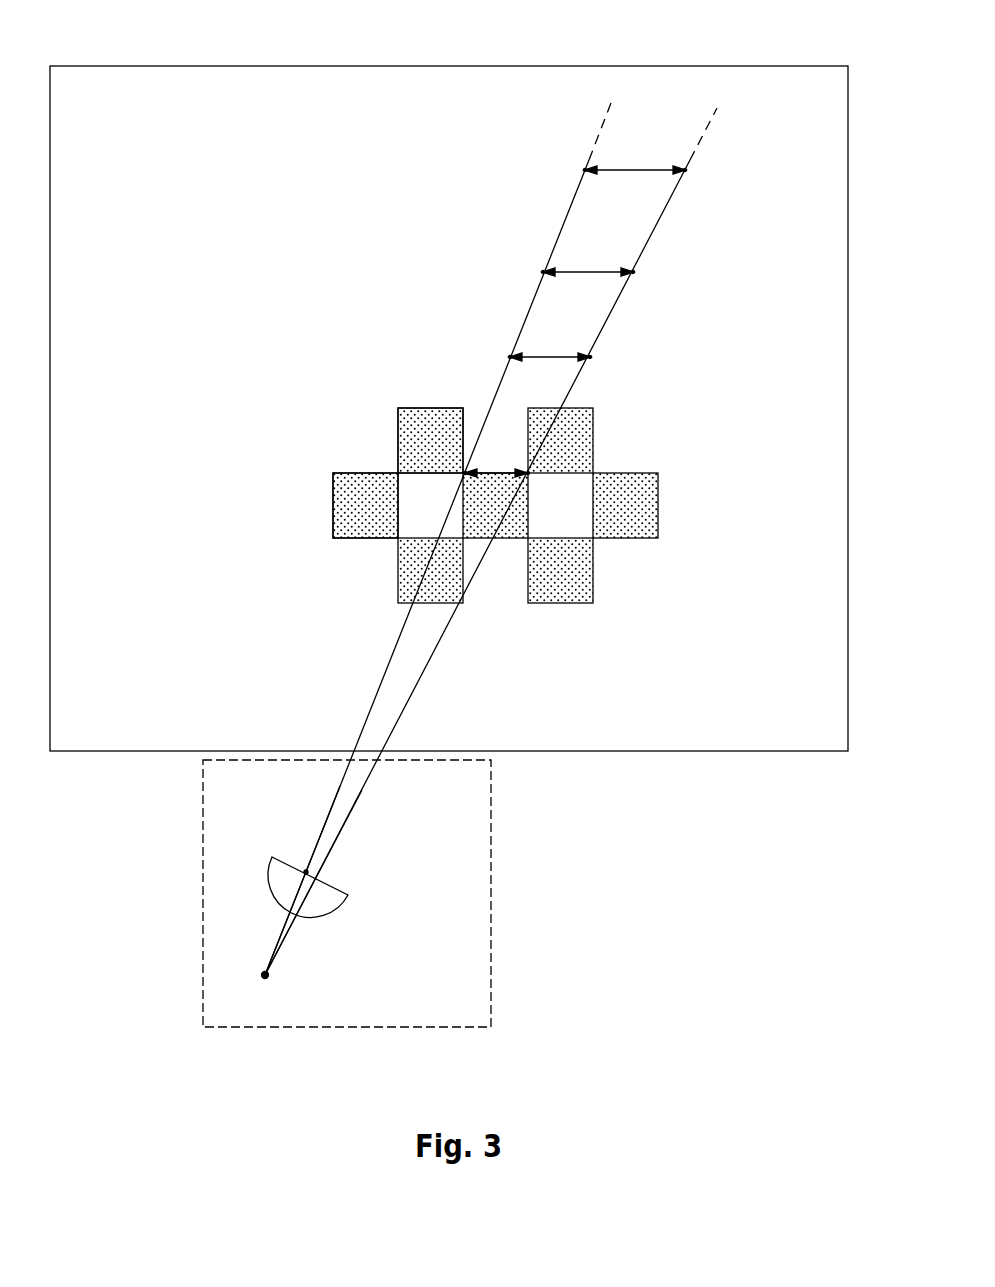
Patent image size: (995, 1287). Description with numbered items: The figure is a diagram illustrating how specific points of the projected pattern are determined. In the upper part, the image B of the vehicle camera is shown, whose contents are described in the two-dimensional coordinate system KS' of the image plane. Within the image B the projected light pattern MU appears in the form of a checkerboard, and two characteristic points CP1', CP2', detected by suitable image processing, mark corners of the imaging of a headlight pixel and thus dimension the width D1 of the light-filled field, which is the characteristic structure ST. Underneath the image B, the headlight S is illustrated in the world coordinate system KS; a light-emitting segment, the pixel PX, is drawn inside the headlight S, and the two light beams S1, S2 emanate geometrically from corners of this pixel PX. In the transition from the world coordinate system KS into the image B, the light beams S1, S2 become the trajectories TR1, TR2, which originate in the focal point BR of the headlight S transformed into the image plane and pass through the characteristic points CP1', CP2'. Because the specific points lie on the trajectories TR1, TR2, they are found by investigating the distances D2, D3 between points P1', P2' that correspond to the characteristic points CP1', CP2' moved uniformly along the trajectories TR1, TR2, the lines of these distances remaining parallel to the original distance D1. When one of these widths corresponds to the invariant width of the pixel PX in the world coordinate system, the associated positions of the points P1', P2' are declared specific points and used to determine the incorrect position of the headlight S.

The two-dimensional coordinate system of the image plane KS' is at (201, 33).
The image B is at (782, 752).
The light pattern MU is at (717, 432).
The characteristic structure ST is at (432, 428).
The first trajectory TR1 is at (417, 683).
The second trajectory TR2 is at (375, 695).
The width of the light-filled field D1 is at (496, 456).
The distance D2 is at (550, 344).
The distance D3 is at (614, 209).
The point on the first trajectory P1' is at (687, 277).
The point on the second trajectory P2' is at (498, 253).
The first image point CP1' is at (614, 529).
The second image point CP2' is at (390, 531).
The world coordinate system KS is at (394, 893).
The first light beam S1 is at (358, 797).
The second light beam S2 is at (337, 788).
The pixel PX is at (313, 875).
The headlight S is at (340, 907).
The focal point BR is at (268, 977).